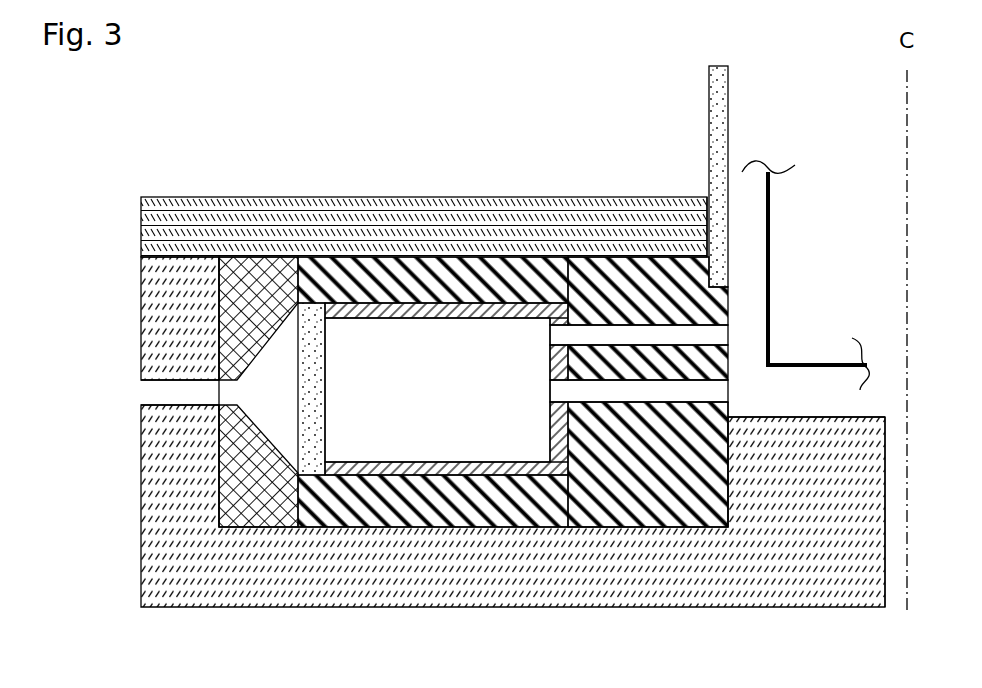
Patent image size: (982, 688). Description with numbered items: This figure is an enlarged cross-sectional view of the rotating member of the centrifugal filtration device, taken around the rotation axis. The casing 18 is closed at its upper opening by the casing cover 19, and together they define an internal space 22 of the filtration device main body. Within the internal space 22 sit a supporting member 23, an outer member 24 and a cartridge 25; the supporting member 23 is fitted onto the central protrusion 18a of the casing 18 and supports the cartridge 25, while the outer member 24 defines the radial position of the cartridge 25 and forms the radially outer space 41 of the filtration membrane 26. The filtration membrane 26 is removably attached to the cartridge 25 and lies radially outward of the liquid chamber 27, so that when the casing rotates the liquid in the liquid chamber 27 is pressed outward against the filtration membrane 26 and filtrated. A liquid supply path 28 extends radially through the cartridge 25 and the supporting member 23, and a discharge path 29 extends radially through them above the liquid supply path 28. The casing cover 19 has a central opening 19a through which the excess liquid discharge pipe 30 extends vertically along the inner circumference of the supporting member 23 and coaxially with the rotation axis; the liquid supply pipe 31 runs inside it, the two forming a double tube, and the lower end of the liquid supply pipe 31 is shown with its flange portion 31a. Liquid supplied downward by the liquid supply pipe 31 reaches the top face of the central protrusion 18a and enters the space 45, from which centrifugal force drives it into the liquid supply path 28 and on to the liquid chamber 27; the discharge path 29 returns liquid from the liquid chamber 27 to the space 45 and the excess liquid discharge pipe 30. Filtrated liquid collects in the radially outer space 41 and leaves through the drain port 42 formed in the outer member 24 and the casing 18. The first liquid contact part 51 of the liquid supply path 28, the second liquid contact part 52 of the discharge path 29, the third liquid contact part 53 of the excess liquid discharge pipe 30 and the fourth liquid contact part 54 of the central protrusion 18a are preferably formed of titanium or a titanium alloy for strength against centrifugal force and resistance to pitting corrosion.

The casing 18 is at (142, 292).
The central protrusion 18a is at (838, 415).
The casing cover 19 is at (218, 197).
The opening 19a is at (686, 228).
The internal space 22 is at (232, 287).
The supporting member 23 is at (620, 277).
The outer member 24 is at (230, 467).
The cartridge 25 is at (433, 298).
The filtration membrane 26 is at (322, 385).
The liquid chamber 27 is at (478, 399).
The liquid supply path 28 is at (658, 393).
The discharge path 29 is at (573, 385).
The excess liquid discharge pipe 30 is at (730, 80).
The liquid supply pipe 31 is at (768, 303).
The retaining plate flange 31a is at (800, 370).
The radially outer space 41 is at (281, 397).
The drain port 42 is at (140, 393).
The space 45 is at (773, 399).
The first liquid contact part 51 is at (727, 485).
The second liquid contact part 52 is at (597, 337).
The third liquid contact part 53 is at (730, 212).
The fourth liquid contact part 54 is at (923, 512).